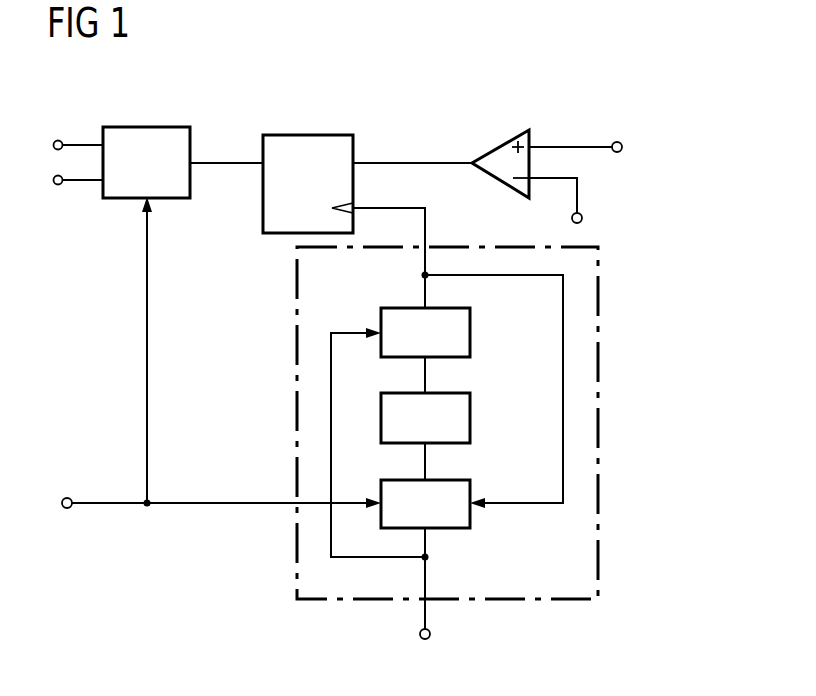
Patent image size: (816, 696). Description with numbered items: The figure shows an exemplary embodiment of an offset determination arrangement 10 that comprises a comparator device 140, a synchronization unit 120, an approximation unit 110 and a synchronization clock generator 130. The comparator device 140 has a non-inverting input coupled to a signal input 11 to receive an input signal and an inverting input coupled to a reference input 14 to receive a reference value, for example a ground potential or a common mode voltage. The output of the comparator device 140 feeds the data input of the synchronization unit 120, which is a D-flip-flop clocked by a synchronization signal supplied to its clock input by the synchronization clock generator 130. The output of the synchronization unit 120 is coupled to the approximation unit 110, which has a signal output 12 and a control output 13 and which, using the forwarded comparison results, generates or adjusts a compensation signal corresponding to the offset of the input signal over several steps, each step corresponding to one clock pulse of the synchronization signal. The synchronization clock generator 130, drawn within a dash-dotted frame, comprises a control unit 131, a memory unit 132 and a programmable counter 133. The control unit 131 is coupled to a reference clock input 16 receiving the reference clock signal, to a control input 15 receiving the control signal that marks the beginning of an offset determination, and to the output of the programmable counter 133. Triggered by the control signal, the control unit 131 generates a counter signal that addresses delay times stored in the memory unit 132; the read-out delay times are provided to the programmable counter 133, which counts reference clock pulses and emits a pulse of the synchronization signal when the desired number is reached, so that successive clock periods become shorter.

The offset determination arrangement 10 is at (373, 353).
The signal input 11 is at (617, 141).
The signal output 12 is at (58, 140).
The control output 13 is at (58, 185).
The reference input 14 is at (582, 217).
The control input 15 is at (67, 498).
The reference clock input 16 is at (431, 632).
The approximation unit 110 is at (146, 127).
The synchronization unit 120 is at (310, 135).
The synchronization clock generator 130 is at (407, 423).
The control unit 131 is at (450, 528).
The memory unit 132 is at (470, 417).
The programmable counter 133 is at (470, 332).
The comparator device 140 is at (502, 140).